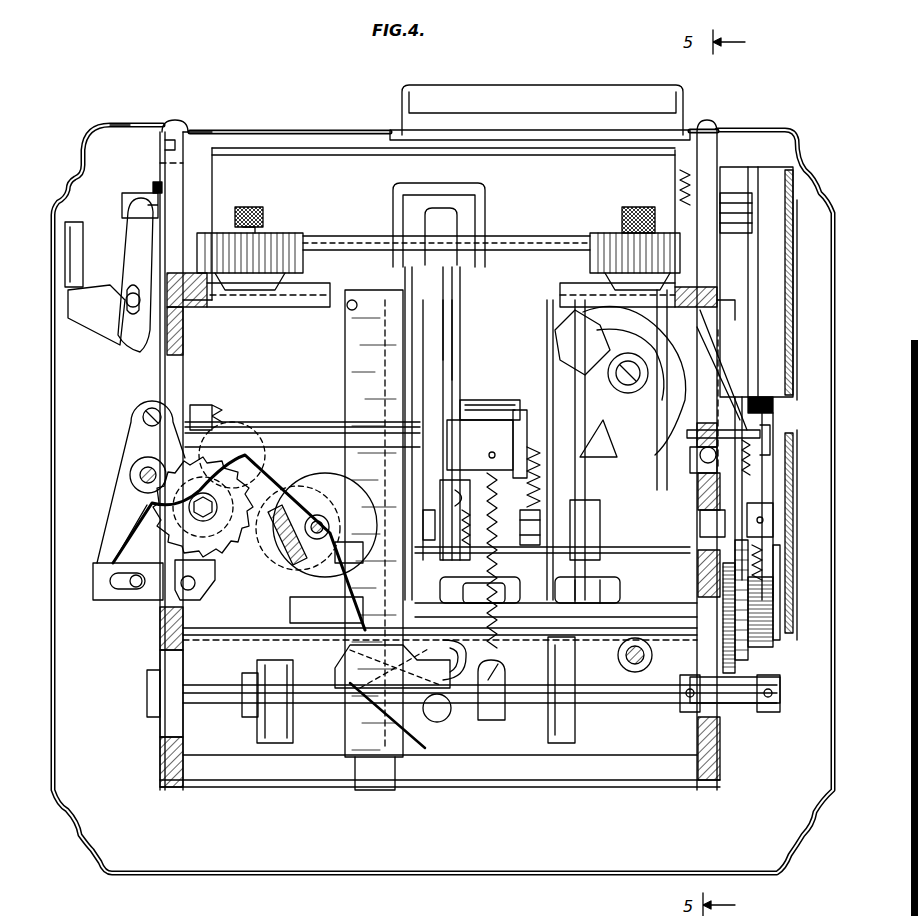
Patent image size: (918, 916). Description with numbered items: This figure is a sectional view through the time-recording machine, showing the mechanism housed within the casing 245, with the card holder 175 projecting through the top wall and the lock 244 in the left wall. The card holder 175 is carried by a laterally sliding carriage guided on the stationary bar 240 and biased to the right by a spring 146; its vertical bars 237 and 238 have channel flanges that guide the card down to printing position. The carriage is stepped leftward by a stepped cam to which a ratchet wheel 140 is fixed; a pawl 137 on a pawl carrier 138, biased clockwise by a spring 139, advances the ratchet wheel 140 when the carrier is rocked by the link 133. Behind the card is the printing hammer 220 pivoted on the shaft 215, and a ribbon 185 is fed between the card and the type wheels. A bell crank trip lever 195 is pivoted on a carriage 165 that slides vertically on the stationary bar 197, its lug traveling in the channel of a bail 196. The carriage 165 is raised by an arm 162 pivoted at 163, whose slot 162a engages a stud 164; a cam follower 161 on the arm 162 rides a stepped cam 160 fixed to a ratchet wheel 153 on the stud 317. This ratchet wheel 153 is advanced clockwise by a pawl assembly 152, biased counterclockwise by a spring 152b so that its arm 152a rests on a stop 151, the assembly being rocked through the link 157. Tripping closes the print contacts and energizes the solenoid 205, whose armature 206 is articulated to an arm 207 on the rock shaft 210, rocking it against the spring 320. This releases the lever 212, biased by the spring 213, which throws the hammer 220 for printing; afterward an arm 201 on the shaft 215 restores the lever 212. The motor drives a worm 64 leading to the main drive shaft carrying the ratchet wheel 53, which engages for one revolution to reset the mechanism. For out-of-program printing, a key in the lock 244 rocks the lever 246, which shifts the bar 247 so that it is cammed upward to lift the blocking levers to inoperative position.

The ratchet wheel 53 is at (757, 640).
The worm 64 is at (652, 657).
The link 133 is at (572, 475).
The pawl 137 is at (700, 333).
The pawl carrier 138 is at (730, 392).
The spring 139 is at (687, 393).
The ratchet wheel 140 is at (575, 400).
The spring 146 is at (688, 170).
The stop 151 is at (95, 568).
The pawl assembly 152 is at (248, 420).
The arm 152a is at (122, 492).
The spring 152b is at (145, 530).
The ratchet wheel 153 is at (215, 580).
The link 157 is at (248, 653).
The stepped cam 160 is at (258, 435).
The cam follower 161 is at (193, 420).
The arm 162 is at (314, 515).
The slot 162a is at (323, 645).
The pivot 163 is at (140, 470).
The stud 164 is at (420, 663).
The carriage 165 is at (398, 725).
The card holder 175 is at (540, 130).
The ribbon 185 is at (322, 242).
The bell crank lever 195 is at (425, 522).
The bail 196 is at (350, 356).
The stationary bar 197 is at (350, 324).
The arm 201 is at (470, 405).
The solenoid 205 is at (527, 675).
The armature 206 is at (520, 528).
The arm 207 is at (500, 505).
The rock shaft 210 is at (585, 525).
The lever 212 is at (447, 375).
The spring 213 is at (492, 588).
The shaft 215 is at (302, 425).
The printing hammer 220 is at (462, 358).
The vertical bar 237 is at (420, 320).
The vertical bar 238 is at (662, 505).
The stationary bar 240 is at (197, 175).
The lock 244 is at (78, 225).
The casing 245 is at (120, 125).
The lever 246 is at (135, 253).
The bar 247 is at (128, 198).
The stud 317 is at (203, 514).
The spring 320 is at (530, 468).